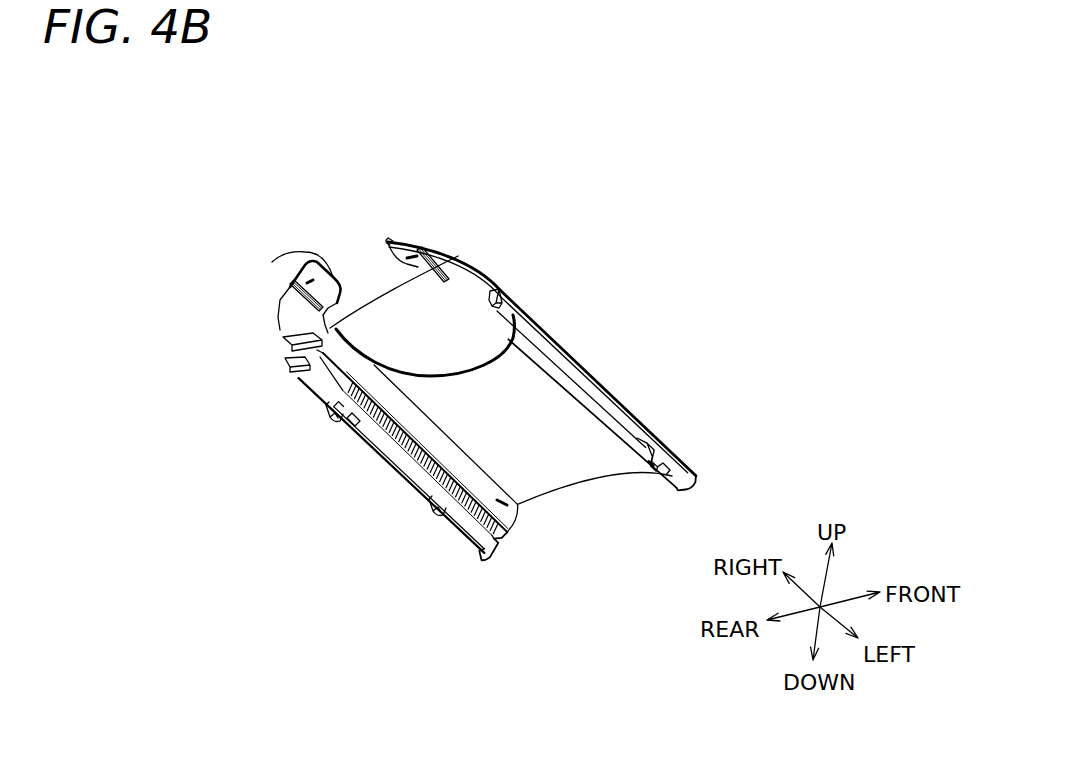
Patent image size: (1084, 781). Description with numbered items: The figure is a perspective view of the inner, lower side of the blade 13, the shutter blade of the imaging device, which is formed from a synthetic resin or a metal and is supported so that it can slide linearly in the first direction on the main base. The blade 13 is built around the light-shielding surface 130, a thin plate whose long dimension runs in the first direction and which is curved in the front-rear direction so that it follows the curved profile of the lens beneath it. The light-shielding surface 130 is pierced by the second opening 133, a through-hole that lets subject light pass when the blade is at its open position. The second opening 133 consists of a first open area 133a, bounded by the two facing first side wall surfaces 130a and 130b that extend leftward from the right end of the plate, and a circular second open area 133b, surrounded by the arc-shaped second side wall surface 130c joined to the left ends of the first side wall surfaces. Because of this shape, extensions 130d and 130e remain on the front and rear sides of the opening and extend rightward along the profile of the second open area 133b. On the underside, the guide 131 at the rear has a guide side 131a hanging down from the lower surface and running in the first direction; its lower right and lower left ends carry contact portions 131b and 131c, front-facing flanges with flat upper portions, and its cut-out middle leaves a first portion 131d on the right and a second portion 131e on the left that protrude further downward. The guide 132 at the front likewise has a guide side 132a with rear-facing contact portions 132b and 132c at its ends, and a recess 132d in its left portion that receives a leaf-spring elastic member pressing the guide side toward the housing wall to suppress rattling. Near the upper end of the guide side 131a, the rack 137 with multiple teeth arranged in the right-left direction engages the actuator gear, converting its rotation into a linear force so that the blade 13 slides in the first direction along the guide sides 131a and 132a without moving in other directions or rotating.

The blade 13 is at (191, 205).
The light-shielding surface 130 is at (597, 466).
The first side wall surface 130a is at (272, 262).
The first side wall surface 130b is at (388, 242).
The second side wall surface 130c is at (330, 327).
The extension 130d is at (473, 283).
The extension 130e is at (290, 297).
The guide 131 is at (222, 551).
The guide side 131a is at (407, 453).
The contact portion 131b is at (325, 397).
The first portion 131d is at (350, 418).
The second portion 131e is at (443, 517).
The contact portion 131c is at (486, 552).
The rack 137 is at (425, 464).
The guide 132 is at (700, 273).
The guide side 132a is at (581, 373).
The contact portion 132b is at (505, 300).
The contact portion 132c is at (693, 478).
The recess 132d is at (653, 444).
The second opening 133 is at (562, 191).
The first open area 133a is at (379, 250).
The second open area 133b is at (443, 307).